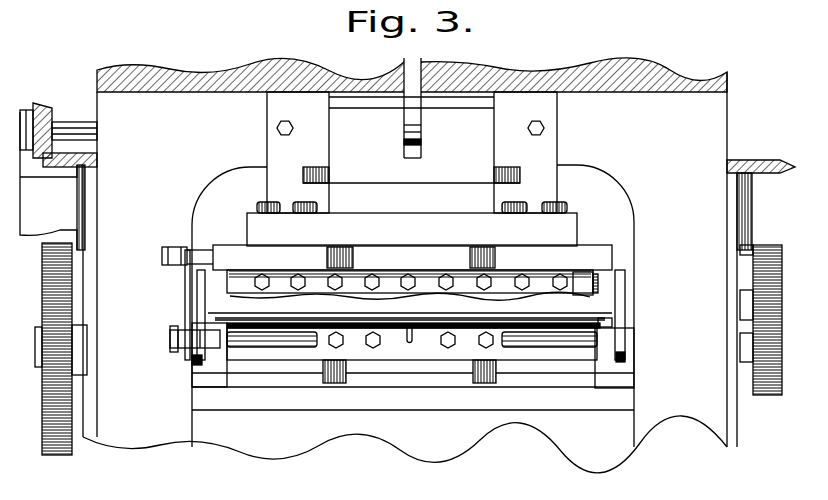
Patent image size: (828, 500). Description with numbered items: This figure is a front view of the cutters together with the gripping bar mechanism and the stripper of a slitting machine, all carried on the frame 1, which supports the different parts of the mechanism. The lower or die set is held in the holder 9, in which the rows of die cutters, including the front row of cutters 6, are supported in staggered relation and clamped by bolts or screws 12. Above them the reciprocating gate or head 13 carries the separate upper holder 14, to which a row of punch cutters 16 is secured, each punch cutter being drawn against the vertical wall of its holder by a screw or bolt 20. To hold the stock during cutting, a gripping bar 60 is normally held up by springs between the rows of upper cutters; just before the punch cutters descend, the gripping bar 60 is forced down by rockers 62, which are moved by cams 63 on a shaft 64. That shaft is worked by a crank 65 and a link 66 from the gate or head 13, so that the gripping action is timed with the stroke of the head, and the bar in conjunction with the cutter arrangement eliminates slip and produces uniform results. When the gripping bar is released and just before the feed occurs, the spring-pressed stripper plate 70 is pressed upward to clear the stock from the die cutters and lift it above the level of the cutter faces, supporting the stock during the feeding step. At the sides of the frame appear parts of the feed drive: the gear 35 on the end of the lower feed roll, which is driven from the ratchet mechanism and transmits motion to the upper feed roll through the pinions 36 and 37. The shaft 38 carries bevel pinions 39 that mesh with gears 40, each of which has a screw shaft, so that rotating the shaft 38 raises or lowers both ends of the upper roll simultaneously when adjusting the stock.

The frame 1 is at (728, 76).
The die cutters 6 is at (439, 322).
The holder 9 is at (394, 358).
The bolts or screws 12 is at (373, 348).
The gate or head 13 is at (477, 205).
The upper holder 14 is at (580, 278).
The punch cutters 16 is at (570, 302).
The screw or bolt 20 is at (297, 276).
The gear 35 is at (53, 456).
The pinion 36 is at (770, 397).
The pinion 37 is at (758, 245).
The shaft 38 is at (70, 124).
The bevel pinion 39 is at (42, 102).
The gear 40 is at (85, 158).
The gripping bar 60 is at (605, 309).
The rocker 62 is at (200, 280).
The cam 63 is at (193, 360).
The shaft 64 is at (293, 348).
The crank 65 is at (180, 342).
The link 66 is at (183, 292).
The stripper plate 70 is at (608, 325).